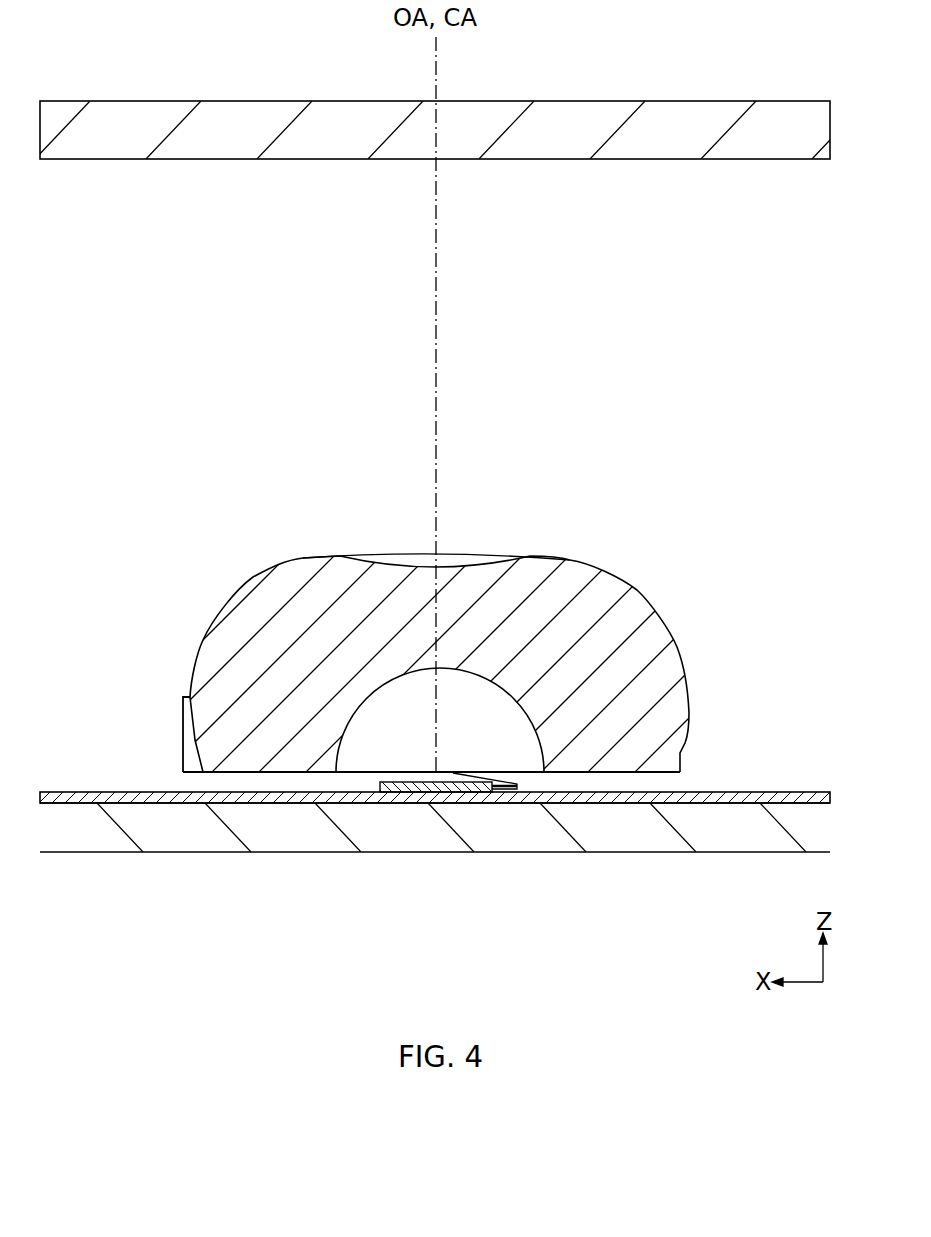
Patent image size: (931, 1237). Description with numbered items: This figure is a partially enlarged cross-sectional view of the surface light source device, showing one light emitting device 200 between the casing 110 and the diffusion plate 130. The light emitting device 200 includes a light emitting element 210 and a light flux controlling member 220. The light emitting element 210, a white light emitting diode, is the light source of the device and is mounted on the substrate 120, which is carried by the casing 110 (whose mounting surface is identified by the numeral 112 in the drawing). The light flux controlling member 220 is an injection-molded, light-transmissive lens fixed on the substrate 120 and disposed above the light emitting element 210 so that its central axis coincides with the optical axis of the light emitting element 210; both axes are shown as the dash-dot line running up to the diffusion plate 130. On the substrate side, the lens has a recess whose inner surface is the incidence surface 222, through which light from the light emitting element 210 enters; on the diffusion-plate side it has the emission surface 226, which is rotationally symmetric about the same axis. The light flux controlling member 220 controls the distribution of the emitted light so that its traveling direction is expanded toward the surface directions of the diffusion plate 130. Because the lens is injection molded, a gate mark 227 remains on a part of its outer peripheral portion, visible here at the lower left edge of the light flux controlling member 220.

The casing 110 is at (435, 873).
The mounting surface of substrate 112 is at (165, 840).
The substrate 120 is at (100, 792).
The diffusion plate 130 is at (145, 113).
The light emitting device 200 is at (465, 708).
The light emitting element 210 is at (408, 790).
The light flux controlling member 220 is at (305, 580).
The incidence surface 222 is at (505, 697).
The emission surface 226 is at (242, 587).
The gate mark 227 is at (183, 697).